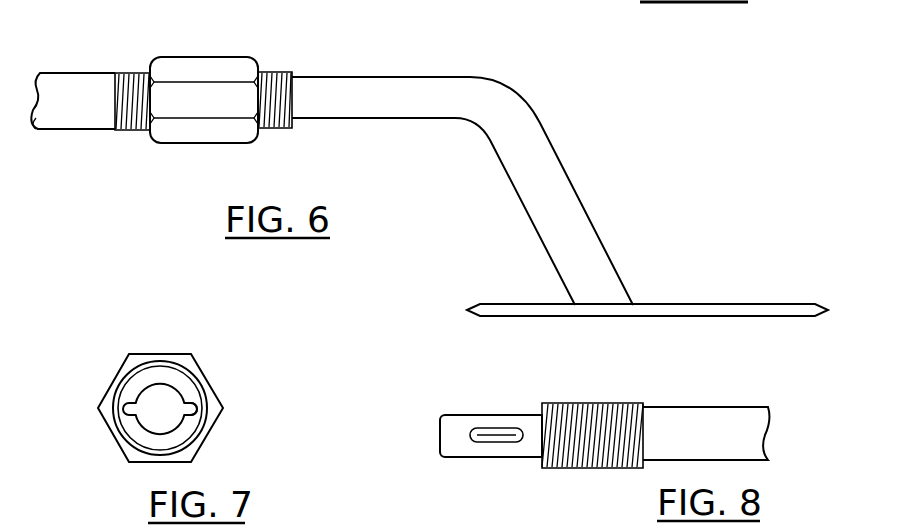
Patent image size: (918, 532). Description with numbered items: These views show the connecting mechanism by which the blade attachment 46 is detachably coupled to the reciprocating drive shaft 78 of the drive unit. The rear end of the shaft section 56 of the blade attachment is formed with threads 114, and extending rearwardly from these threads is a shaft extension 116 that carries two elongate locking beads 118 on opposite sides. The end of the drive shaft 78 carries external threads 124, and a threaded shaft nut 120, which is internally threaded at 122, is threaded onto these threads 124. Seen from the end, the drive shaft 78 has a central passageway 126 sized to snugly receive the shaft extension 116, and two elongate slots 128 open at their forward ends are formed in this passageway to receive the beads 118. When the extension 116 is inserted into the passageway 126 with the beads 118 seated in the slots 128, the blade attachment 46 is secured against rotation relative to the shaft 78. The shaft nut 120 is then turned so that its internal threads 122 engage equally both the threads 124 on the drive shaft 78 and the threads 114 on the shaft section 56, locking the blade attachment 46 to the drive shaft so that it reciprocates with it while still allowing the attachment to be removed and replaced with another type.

In FIG. 6, the blade attachment 46 is at (545, 120).
In FIG. 8, the shaft section 56 is at (724, 415).
In FIG. 6, the reciprocating drive shaft 78 is at (86, 73).
In FIG. 7, the reciprocating drive shaft 78 is at (130, 385).
In FIG. 6, the threads 114 is at (278, 71).
In FIG. 8, the threads 114 is at (590, 404).
In FIG. 8, the shaft extension 116 is at (480, 458).
In FIG. 8, the locking beads 118 is at (490, 427).
In FIG. 6, the threaded shaft nut 120 is at (205, 64).
In FIG. 7, the threaded shaft nut 120 is at (208, 349).
In FIG. 7, the internal threads 122 is at (205, 429).
In FIG. 6, the threads 124 is at (128, 73).
In FIG. 7, the central passageway 126 is at (180, 388).
In FIG. 7, the elongate slots 128 is at (205, 405).